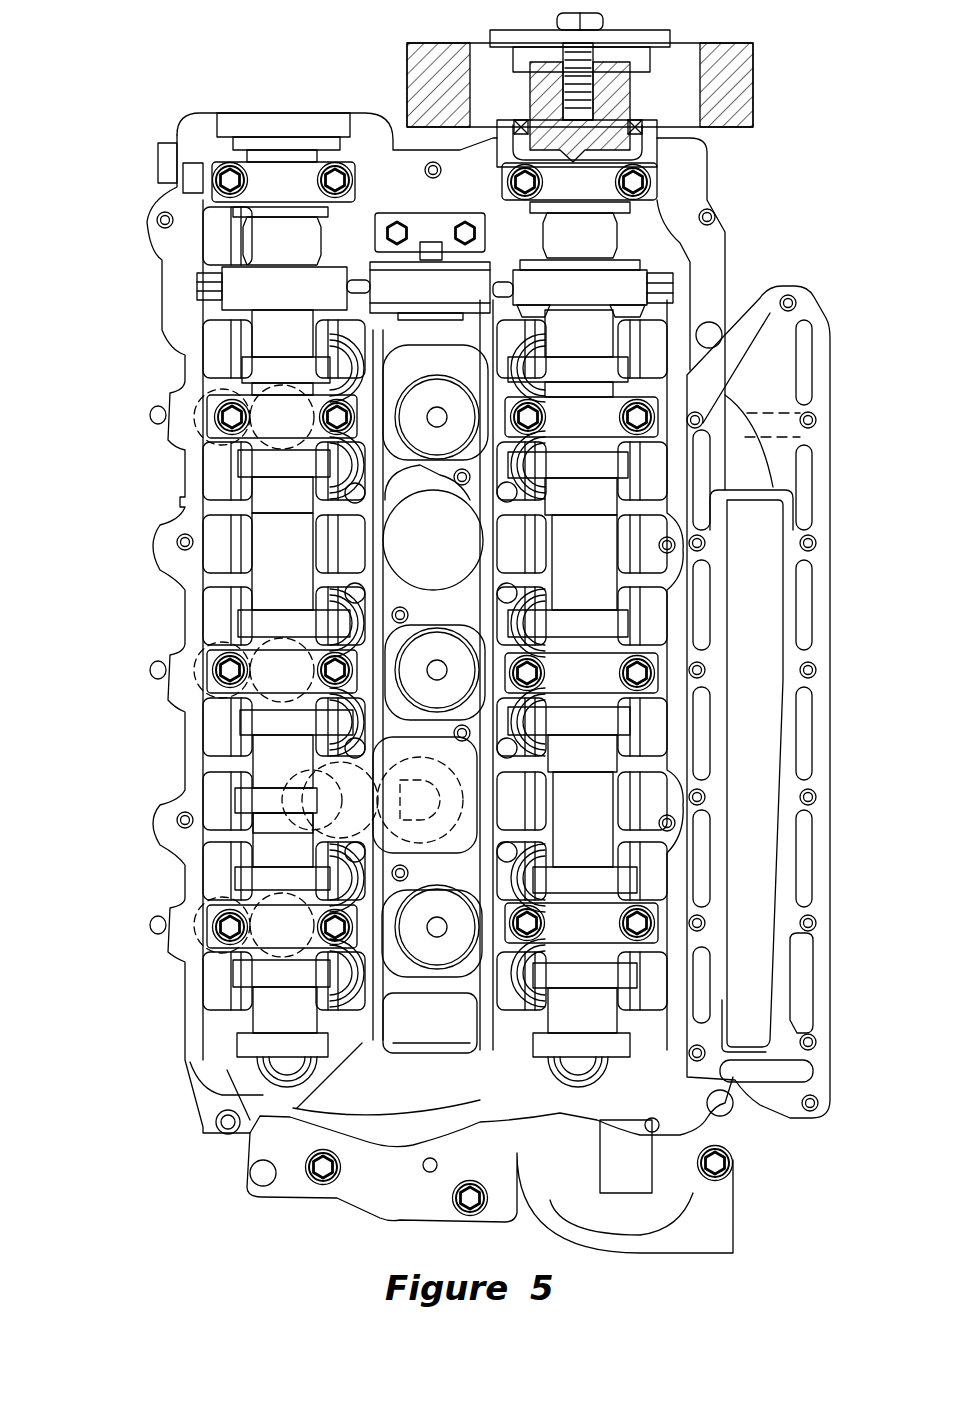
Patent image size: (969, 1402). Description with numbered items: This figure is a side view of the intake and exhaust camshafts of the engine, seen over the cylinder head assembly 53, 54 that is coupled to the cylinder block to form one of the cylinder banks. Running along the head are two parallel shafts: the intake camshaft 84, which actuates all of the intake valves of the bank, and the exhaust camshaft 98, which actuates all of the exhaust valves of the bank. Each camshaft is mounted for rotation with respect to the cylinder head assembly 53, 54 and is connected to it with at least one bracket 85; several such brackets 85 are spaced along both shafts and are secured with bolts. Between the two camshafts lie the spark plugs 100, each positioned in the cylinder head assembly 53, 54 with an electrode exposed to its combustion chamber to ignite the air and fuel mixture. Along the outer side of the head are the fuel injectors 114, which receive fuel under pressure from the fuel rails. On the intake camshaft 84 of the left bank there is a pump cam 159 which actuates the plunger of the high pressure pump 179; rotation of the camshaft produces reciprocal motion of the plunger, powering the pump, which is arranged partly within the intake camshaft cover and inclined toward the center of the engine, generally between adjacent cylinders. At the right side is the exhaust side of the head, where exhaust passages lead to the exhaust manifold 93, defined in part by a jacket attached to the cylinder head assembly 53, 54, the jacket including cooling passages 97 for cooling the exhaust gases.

The left cylinder head assembly 53 is at (174, 110).
The right cylinder head assembly 54 is at (440, 694).
The intake camshaft 84 is at (268, 238).
The bracket 85 is at (282, 408).
The exhaust manifold 93 is at (772, 690).
The cooling passages 97 is at (792, 466).
The exhaust camshaft 98 is at (600, 238).
The spark plug 100 is at (437, 413).
The fuel injectors 114 is at (144, 412).
The pump cam 159 is at (270, 800).
The high pressure pump 179 is at (288, 834).